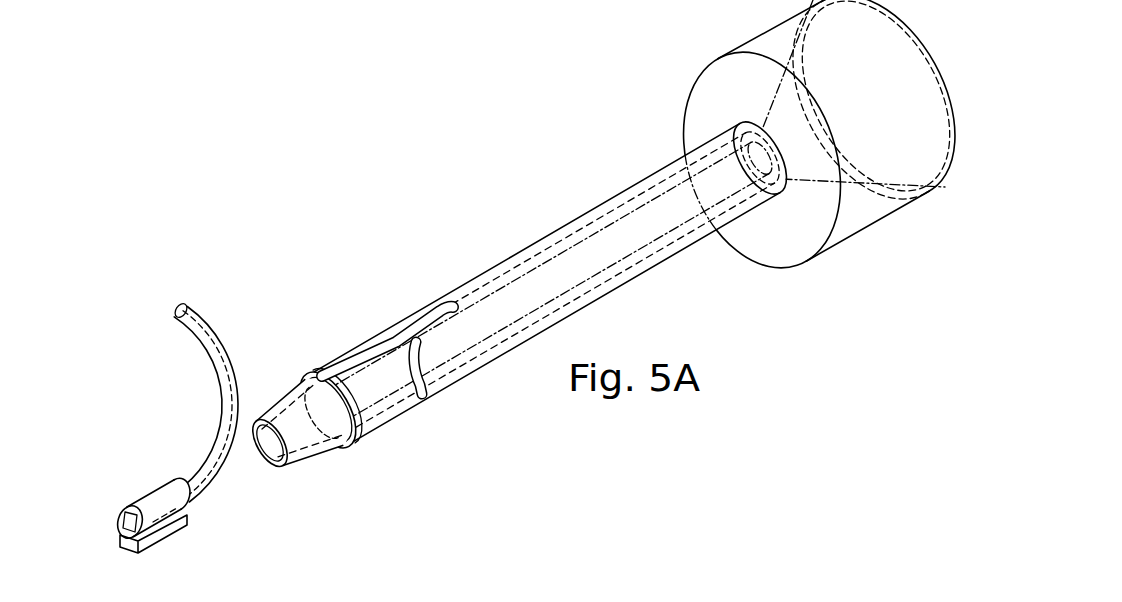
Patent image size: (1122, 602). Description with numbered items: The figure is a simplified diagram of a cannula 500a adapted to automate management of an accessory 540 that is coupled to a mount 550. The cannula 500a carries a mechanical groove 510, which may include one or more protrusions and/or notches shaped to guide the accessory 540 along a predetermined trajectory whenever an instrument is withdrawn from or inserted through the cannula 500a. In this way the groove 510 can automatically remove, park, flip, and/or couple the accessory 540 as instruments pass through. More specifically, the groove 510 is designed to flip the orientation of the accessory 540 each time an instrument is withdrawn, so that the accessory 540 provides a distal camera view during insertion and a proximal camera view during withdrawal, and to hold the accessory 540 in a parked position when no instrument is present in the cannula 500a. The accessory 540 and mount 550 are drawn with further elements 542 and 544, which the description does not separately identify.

The cannula 500a is at (283, 130).
The mechanical groove 510 is at (425, 303).
The accessory 540 is at (86, 368).
The connector body 542 is at (149, 499).
The curved tube 544 is at (225, 345).
The mount 550 is at (121, 548).